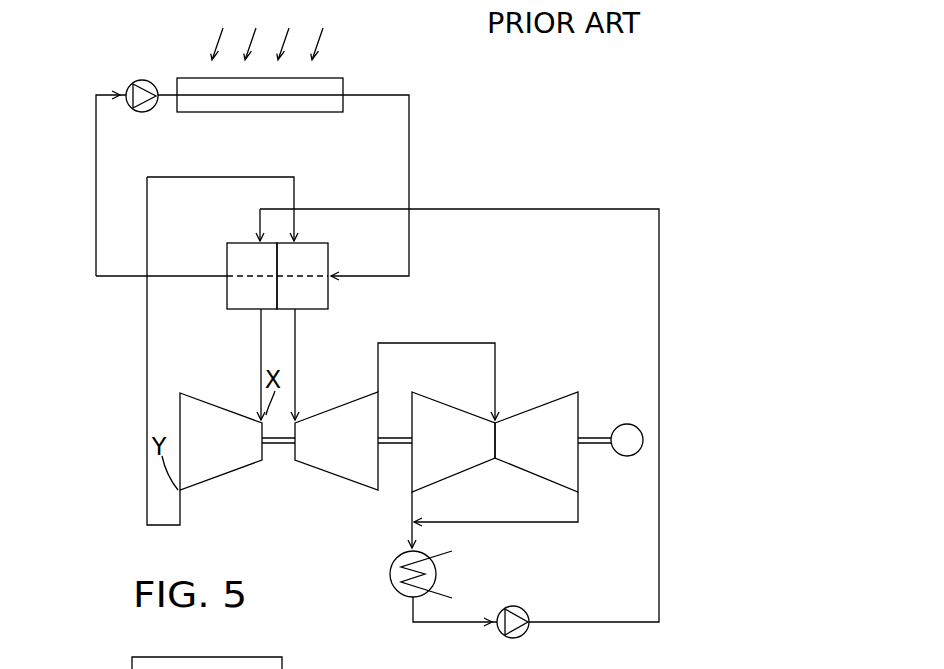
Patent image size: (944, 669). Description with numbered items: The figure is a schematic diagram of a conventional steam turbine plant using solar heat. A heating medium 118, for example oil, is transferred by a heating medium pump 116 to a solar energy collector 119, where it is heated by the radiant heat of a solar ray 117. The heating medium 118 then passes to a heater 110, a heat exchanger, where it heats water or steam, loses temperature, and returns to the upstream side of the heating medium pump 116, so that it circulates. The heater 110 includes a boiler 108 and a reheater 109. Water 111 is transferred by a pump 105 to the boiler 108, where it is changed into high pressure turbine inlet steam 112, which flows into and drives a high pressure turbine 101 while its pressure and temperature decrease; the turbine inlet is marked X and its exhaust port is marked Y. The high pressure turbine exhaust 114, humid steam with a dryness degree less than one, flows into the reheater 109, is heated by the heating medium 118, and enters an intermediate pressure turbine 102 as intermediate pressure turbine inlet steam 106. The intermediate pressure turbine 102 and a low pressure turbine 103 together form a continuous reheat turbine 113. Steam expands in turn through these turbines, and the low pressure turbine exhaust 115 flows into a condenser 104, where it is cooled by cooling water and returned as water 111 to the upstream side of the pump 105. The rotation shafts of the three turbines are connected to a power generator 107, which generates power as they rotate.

The high pressure turbine 101 is at (228, 478).
The intermediate pressure turbine 102 is at (333, 478).
The low pressure turbine 103 is at (543, 402).
The condenser 104 is at (390, 575).
The pump 105 is at (514, 605).
The intermediate pressure turbine inlet steam 106 is at (296, 363).
The power generator 107 is at (627, 423).
The boiler 108 is at (226, 293).
The reheater 109 is at (306, 311).
The heater 110 is at (185, 307).
The water 111 is at (544, 208).
The high pressure turbine inlet steam 112 is at (260, 375).
The reheat turbine 113 is at (510, 393).
The high pressure turbine exhaust 114 is at (146, 478).
The low pressure turbine exhaust 115 is at (414, 502).
The heating medium pump 116 is at (142, 79).
The solar ray 117 is at (333, 46).
The heating medium 118 is at (95, 167).
The solar energy collector 119 is at (275, 113).